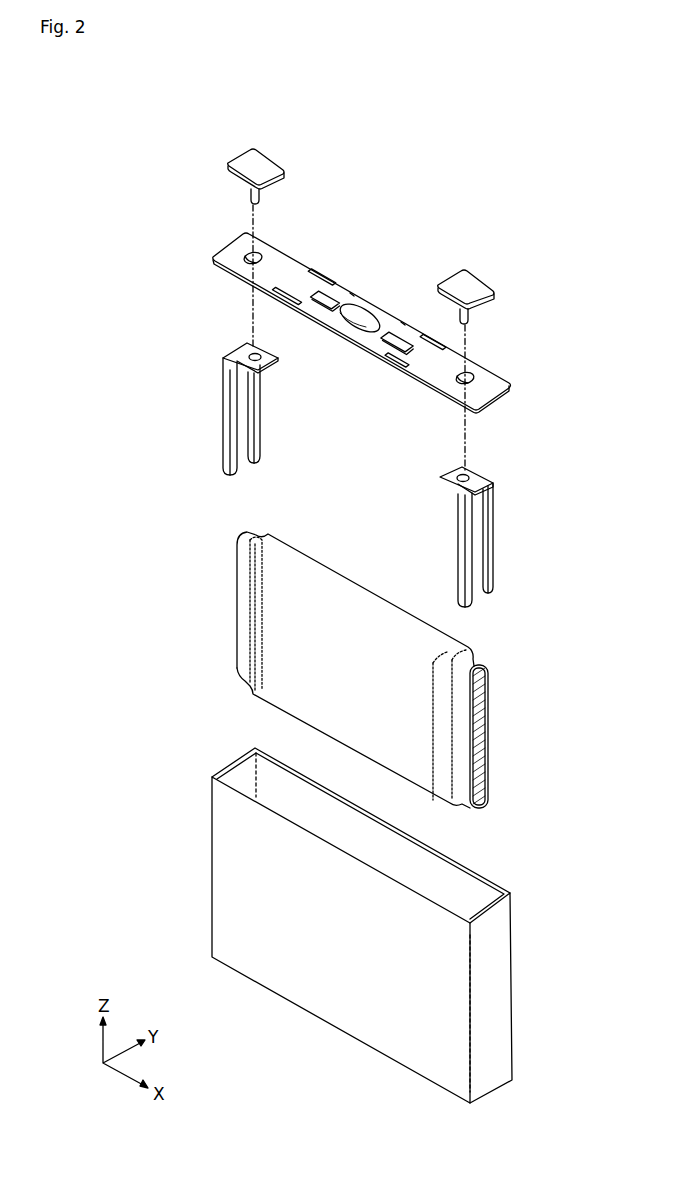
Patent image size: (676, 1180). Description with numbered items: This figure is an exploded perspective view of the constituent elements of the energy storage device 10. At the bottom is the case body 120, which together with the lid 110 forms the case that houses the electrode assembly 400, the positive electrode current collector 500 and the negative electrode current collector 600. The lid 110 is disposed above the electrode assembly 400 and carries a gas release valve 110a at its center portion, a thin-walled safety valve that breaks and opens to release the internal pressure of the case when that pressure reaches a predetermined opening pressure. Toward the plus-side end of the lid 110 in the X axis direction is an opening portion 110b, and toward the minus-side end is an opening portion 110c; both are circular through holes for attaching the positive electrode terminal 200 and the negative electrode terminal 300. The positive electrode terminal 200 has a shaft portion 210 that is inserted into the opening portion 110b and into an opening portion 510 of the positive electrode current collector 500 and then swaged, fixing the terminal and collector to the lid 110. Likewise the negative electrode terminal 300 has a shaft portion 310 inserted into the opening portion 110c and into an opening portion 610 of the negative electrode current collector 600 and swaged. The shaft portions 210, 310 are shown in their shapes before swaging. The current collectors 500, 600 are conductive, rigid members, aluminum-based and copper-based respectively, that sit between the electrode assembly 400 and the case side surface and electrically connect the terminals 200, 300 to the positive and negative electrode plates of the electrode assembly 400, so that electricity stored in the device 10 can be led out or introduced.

The energy storage device 10 is at (478, 161).
The lid 110 is at (292, 269).
The gas release valve 110a is at (371, 313).
The opening portion 110b is at (457, 388).
The opening portion 110c is at (241, 270).
The case body 120 is at (512, 993).
The positive electrode terminal 200 is at (472, 282).
The shaft portion 210 is at (469, 320).
The negative electrode terminal 300 is at (263, 162).
The shaft portion 310 is at (249, 190).
The electrode assembly 400 is at (491, 707).
The positive electrode current collector 500 is at (477, 475).
The opening portion 510 is at (452, 481).
The negative electrode current collector 600 is at (242, 353).
The opening portion 610 is at (259, 356).